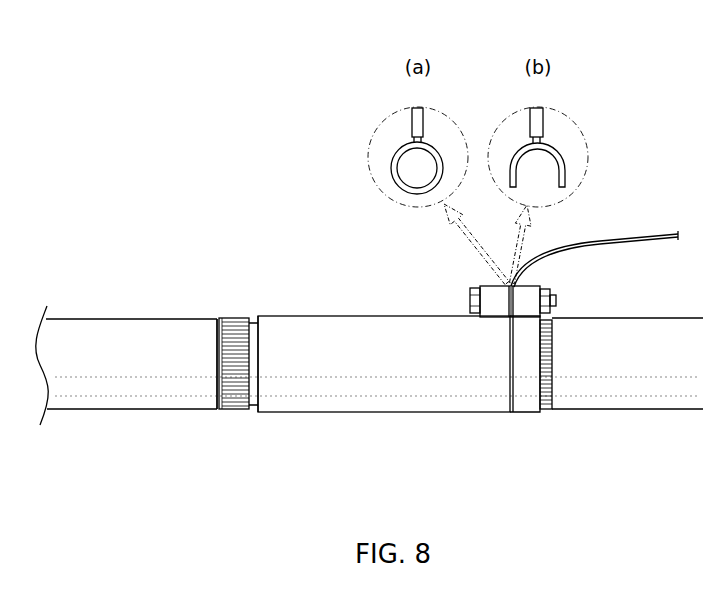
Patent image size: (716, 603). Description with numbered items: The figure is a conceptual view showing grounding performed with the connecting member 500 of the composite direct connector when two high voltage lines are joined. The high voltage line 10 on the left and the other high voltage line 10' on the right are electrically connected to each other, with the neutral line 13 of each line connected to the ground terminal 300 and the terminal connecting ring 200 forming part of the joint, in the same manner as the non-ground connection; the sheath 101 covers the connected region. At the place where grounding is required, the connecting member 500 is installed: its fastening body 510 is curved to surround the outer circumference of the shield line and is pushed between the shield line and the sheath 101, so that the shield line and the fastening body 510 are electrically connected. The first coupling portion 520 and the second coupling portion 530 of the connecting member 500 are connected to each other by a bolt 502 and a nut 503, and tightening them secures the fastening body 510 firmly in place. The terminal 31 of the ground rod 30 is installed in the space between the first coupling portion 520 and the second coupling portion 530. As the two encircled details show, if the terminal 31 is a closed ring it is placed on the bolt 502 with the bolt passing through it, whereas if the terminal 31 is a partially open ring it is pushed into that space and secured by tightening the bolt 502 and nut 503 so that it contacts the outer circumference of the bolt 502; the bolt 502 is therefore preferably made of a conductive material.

The high voltage line 10 is at (368, 399).
The high voltage line 10' is at (627, 408).
The neutral line 13 is at (220, 317).
The ground rod 30 is at (632, 233).
The terminal 31 is at (505, 280).
The sheath 101 is at (372, 400).
The terminal connecting ring 200 is at (257, 400).
The ground terminal 300 is at (238, 398).
The connecting member 500 is at (498, 391).
The bolt 502 is at (470, 300).
The nut 503 is at (558, 300).
The fastening body 510 is at (532, 307).
The first coupling portion 520 is at (553, 395).
The second coupling portion 530 is at (492, 305).